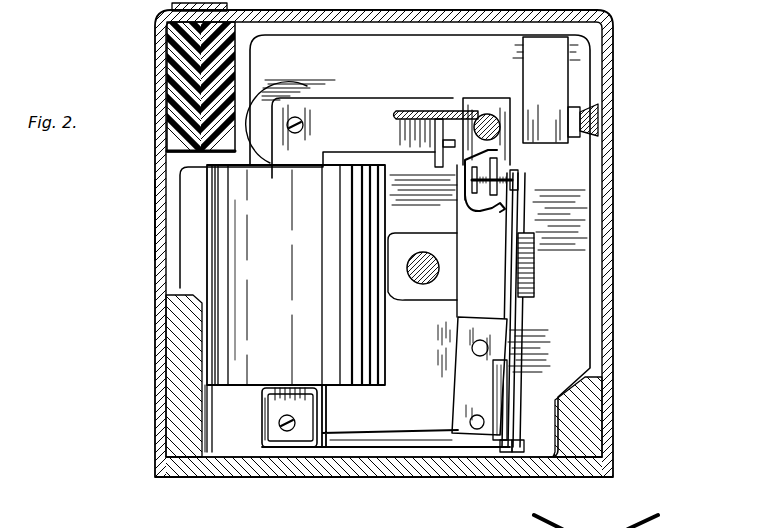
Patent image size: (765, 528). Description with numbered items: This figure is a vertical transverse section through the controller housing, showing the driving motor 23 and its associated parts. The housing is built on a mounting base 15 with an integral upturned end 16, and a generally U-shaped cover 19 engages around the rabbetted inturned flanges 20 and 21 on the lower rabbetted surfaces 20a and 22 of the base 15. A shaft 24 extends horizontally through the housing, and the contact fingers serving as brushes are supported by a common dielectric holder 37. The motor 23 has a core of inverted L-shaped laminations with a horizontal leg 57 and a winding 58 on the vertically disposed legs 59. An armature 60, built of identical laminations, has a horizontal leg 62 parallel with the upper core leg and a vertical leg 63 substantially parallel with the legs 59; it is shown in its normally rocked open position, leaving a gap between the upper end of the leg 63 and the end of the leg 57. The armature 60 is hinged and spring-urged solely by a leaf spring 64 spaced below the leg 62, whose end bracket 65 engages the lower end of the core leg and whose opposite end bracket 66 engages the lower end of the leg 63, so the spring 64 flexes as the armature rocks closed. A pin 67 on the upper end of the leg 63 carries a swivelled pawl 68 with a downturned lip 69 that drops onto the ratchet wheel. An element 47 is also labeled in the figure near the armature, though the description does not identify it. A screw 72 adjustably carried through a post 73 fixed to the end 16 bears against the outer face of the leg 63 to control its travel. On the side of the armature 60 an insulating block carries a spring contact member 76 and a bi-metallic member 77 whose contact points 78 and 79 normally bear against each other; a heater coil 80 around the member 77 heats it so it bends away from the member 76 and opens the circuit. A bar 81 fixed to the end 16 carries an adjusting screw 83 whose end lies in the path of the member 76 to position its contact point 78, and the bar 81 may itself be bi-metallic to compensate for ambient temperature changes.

The mounting base 15 is at (367, 470).
The upturned end 16 is at (578, 340).
The cover 19 is at (163, 220).
The rabbetted inturned flange 20 is at (603, 230).
The lower rabbetted surface 20a is at (603, 393).
The rabbetted inturned flange 21 is at (163, 258).
The lower rabbetted surface 22 is at (167, 322).
The motor 23 is at (235, 278).
The shaft 24 is at (420, 282).
The dielectric holder 37 is at (173, 73).
The pivot plate 47 is at (403, 240).
The horizontal leg 57 is at (347, 100).
The winding 58 is at (215, 356).
The vertically disposed leg 59 is at (287, 162).
The armature 60 is at (480, 107).
The horizontal leg 62 is at (425, 443).
The vertical leg 63 is at (467, 228).
The leaf spring 64 is at (393, 449).
The end bracket 65 is at (278, 408).
The end bracket 66 is at (483, 390).
The pin 67 is at (480, 118).
The pawl 68 is at (420, 110).
The downturned lip 69 is at (393, 123).
The screw 72 is at (599, 127).
The post 73 is at (562, 82).
The spring contact member 76 is at (512, 266).
The bi-metallic member 77 is at (523, 310).
The contact point 78 is at (500, 213).
The contact point 79 is at (518, 183).
The heater coil 80 is at (534, 268).
The bar 81 is at (503, 163).
The adjusting screw 83 is at (512, 176).